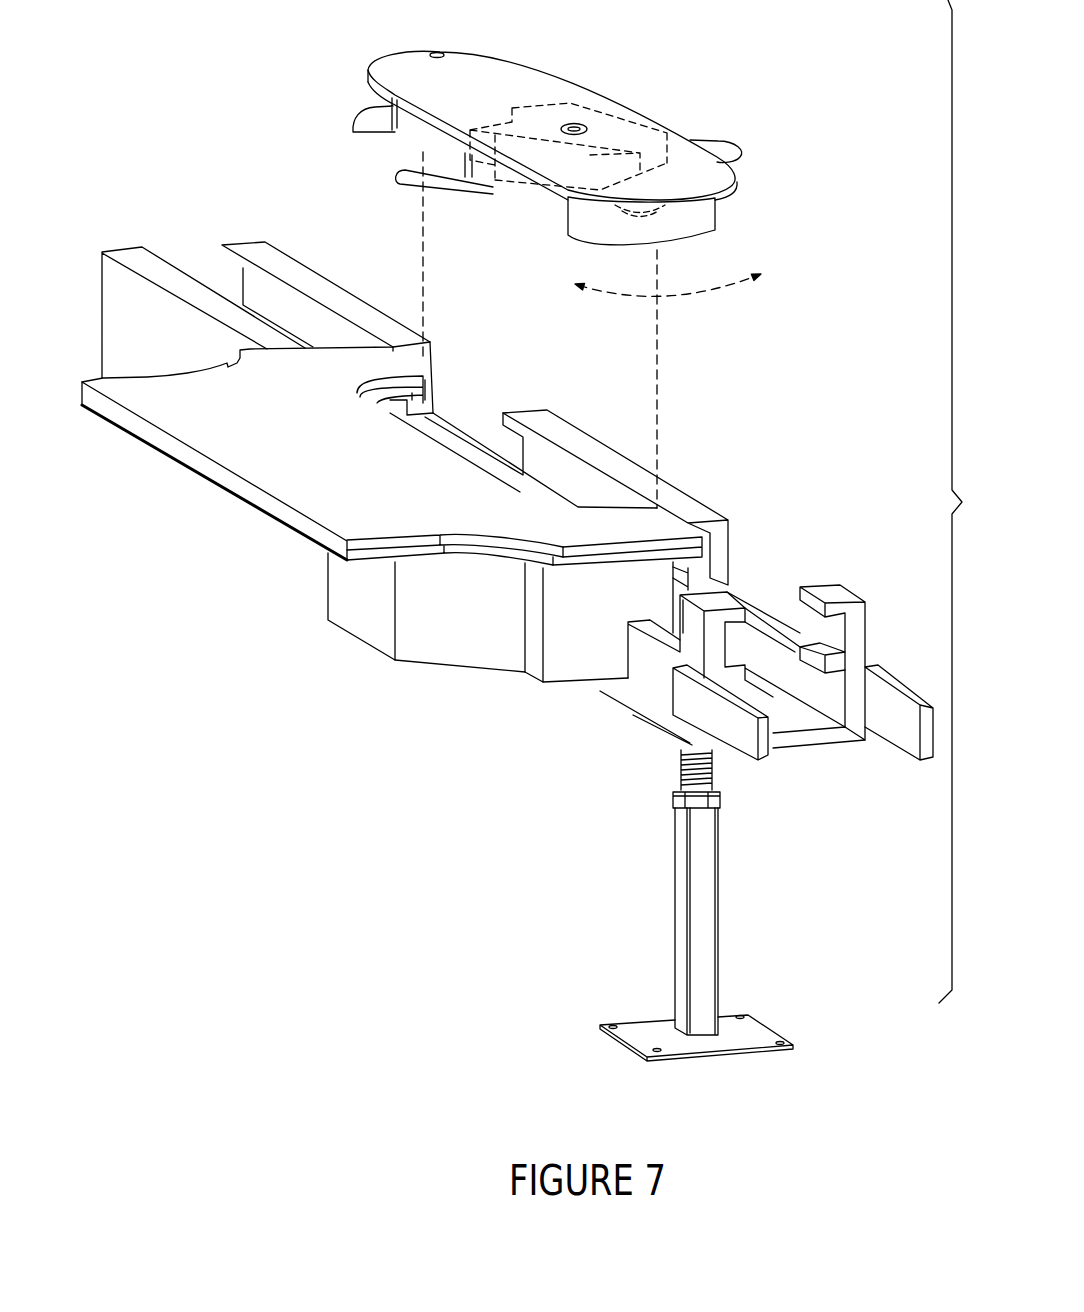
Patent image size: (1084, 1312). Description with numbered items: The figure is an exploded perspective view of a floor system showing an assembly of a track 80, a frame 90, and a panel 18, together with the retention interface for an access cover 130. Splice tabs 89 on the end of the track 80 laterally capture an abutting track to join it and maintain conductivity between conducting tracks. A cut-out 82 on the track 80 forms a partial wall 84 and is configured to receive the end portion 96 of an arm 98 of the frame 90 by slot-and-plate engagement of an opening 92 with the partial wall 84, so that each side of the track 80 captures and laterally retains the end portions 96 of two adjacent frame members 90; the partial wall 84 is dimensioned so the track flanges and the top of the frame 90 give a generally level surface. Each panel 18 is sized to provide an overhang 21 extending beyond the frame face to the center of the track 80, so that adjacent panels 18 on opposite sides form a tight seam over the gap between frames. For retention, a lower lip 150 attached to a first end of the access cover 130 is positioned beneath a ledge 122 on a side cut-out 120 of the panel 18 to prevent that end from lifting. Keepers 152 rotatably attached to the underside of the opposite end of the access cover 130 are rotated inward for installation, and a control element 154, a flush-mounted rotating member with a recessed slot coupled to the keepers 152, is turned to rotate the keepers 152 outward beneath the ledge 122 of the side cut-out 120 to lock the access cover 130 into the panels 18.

The panel 18 is at (232, 491).
The overhang 21 is at (692, 565).
The track 80 is at (817, 749).
The cut-out 82 is at (760, 578).
The partial wall 84 is at (645, 675).
The splice tab 89 is at (931, 762).
The frame 90 is at (347, 653).
The opening 92 is at (624, 657).
The end portion 96 is at (557, 672).
The arm 98 is at (463, 652).
The side cut-out 120 is at (456, 408).
The ledge 122 is at (433, 386).
The access cover 130 is at (574, 65).
The lower lip 150 is at (352, 116).
The keeper 152 is at (447, 195).
The control element 154 is at (586, 121).